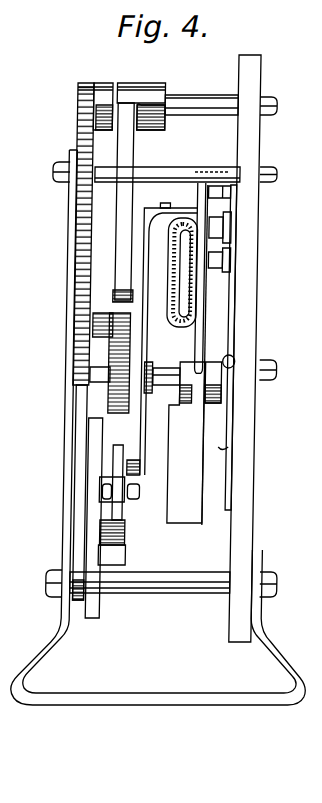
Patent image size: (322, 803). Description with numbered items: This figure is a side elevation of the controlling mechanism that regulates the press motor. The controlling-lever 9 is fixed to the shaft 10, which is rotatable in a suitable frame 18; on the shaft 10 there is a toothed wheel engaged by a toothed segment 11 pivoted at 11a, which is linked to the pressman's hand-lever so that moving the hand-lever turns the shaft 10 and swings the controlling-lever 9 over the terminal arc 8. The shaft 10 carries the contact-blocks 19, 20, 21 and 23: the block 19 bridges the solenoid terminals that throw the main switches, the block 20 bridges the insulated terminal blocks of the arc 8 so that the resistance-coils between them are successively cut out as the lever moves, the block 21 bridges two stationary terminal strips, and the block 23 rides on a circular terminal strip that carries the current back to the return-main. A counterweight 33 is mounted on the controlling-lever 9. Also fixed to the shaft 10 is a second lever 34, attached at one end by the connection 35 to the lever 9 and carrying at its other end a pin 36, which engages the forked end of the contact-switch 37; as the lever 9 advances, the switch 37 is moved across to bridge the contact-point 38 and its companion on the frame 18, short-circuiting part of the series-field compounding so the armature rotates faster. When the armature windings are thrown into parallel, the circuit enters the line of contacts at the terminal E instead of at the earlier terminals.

The terminal arc 8 is at (232, 357).
The controlling-lever 9 is at (203, 340).
The shaft 10 is at (174, 377).
The toothed segment 11 is at (130, 153).
The pivot 11a is at (194, 105).
The frame 18 is at (81, 237).
The contact-block 19 is at (236, 200).
The contact-block 20 is at (237, 241).
The contact-block 21 is at (240, 262).
The contact-block 23 is at (236, 327).
The counterweight 33 is at (186, 442).
The second lever 34 is at (143, 318).
The connection 35 is at (169, 210).
The pin 36 is at (118, 467).
The contact-switch 37 is at (127, 500).
The contact-point 38 is at (134, 537).
The terminal E is at (248, 452).